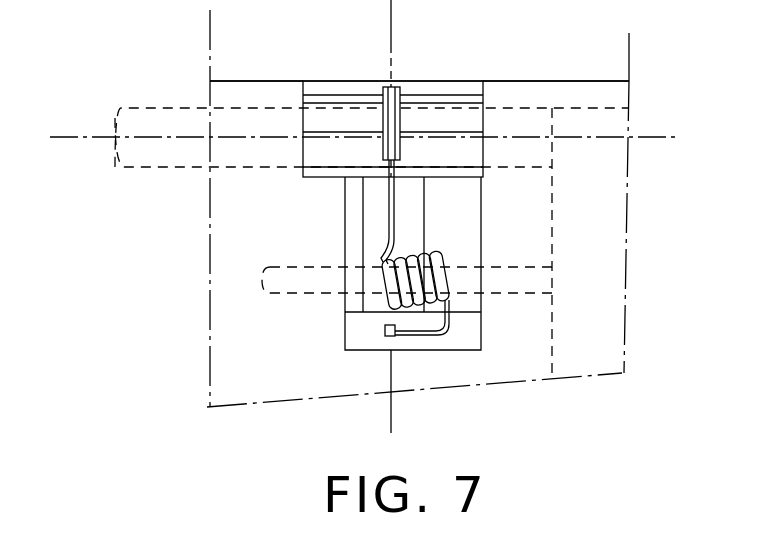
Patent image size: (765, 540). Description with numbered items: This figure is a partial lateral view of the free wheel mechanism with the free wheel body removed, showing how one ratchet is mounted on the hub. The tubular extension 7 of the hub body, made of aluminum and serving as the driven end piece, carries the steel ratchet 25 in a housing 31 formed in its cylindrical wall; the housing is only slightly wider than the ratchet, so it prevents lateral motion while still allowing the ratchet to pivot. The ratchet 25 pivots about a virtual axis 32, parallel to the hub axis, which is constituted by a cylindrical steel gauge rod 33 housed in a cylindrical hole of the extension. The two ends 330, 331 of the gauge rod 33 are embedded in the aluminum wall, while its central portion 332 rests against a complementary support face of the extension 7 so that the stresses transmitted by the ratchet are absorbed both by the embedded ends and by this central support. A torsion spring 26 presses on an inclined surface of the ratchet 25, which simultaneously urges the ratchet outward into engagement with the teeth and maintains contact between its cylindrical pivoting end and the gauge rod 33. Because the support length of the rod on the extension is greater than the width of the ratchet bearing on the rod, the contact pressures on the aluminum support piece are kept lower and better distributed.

The extension 7 is at (495, 81).
The ratchet 25 is at (330, 89).
The torsion spring 26 is at (397, 213).
The housing 31 is at (460, 170).
The virtual axis 32 is at (68, 139).
The gauge rod 33 is at (152, 170).
The end of gauge rod 330 is at (200, 128).
The end of gauge rod 331 is at (523, 128).
The central portion of gauge rod 332 is at (428, 120).